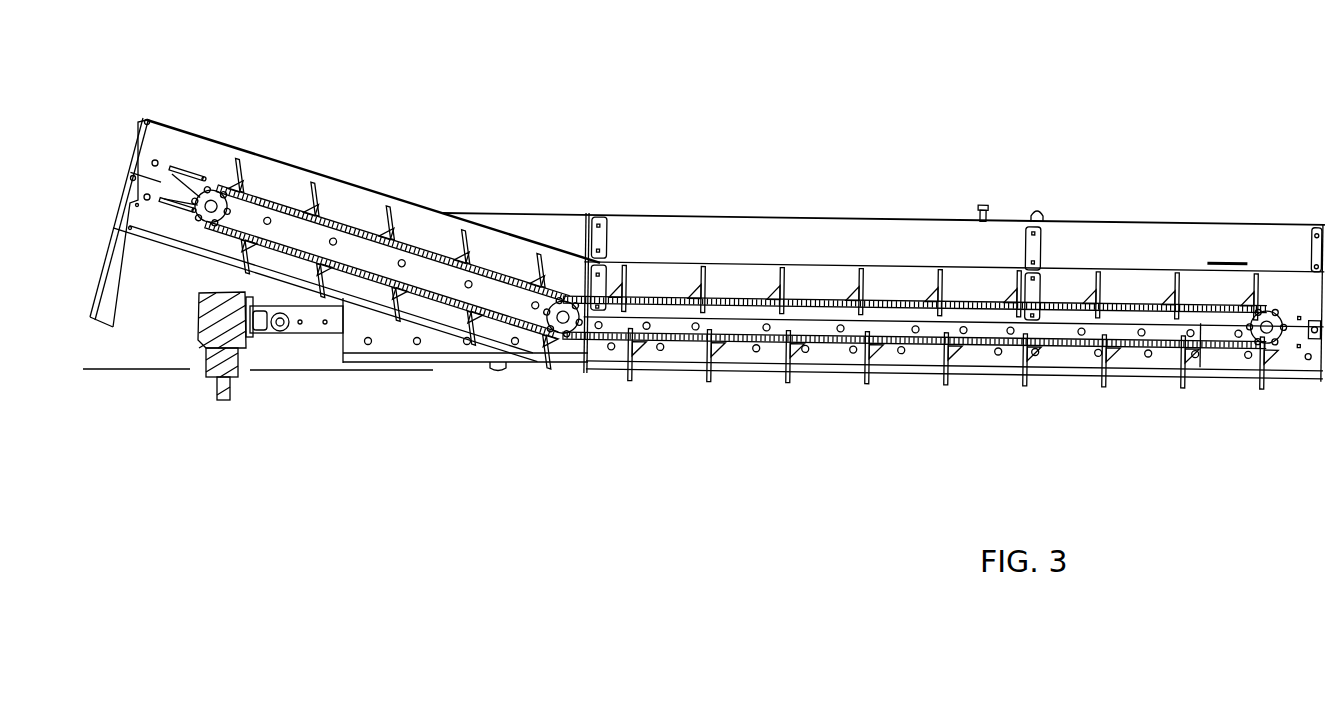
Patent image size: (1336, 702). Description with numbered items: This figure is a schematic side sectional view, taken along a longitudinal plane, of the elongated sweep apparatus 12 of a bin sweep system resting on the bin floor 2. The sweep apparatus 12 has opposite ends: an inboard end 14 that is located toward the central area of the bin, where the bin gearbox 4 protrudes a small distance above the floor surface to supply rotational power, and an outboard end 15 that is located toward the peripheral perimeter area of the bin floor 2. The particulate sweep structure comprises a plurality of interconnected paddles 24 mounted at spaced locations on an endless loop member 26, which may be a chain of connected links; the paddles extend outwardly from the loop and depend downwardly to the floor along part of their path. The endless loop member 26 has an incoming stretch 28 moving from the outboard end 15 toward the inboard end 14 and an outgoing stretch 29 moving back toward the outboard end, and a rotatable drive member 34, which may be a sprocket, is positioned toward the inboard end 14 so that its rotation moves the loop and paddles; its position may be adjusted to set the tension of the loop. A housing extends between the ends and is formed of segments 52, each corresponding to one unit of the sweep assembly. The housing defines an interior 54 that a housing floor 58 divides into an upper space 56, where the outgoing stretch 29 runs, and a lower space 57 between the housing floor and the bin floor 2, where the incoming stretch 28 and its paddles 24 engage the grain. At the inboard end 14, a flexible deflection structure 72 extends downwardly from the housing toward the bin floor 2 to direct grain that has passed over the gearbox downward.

The bin floor 2 is at (278, 372).
The bin gearbox 4 is at (218, 362).
The sweep apparatus 12 is at (640, 240).
The inboard end 14 is at (164, 102).
The outboard end 15 is at (1284, 195).
The paddles 24 is at (710, 356).
The endless loop member 26 is at (422, 240).
The incoming stretch 28 is at (820, 347).
The outgoing stretch 29 is at (732, 298).
The rotatable drive member 34 is at (214, 192).
The segments 52 is at (1065, 238).
The interior 54 is at (832, 278).
The upper space 56 is at (910, 283).
The lower space 57 is at (919, 358).
The housing floor 58 is at (673, 313).
The deflection structure 72 is at (110, 306).